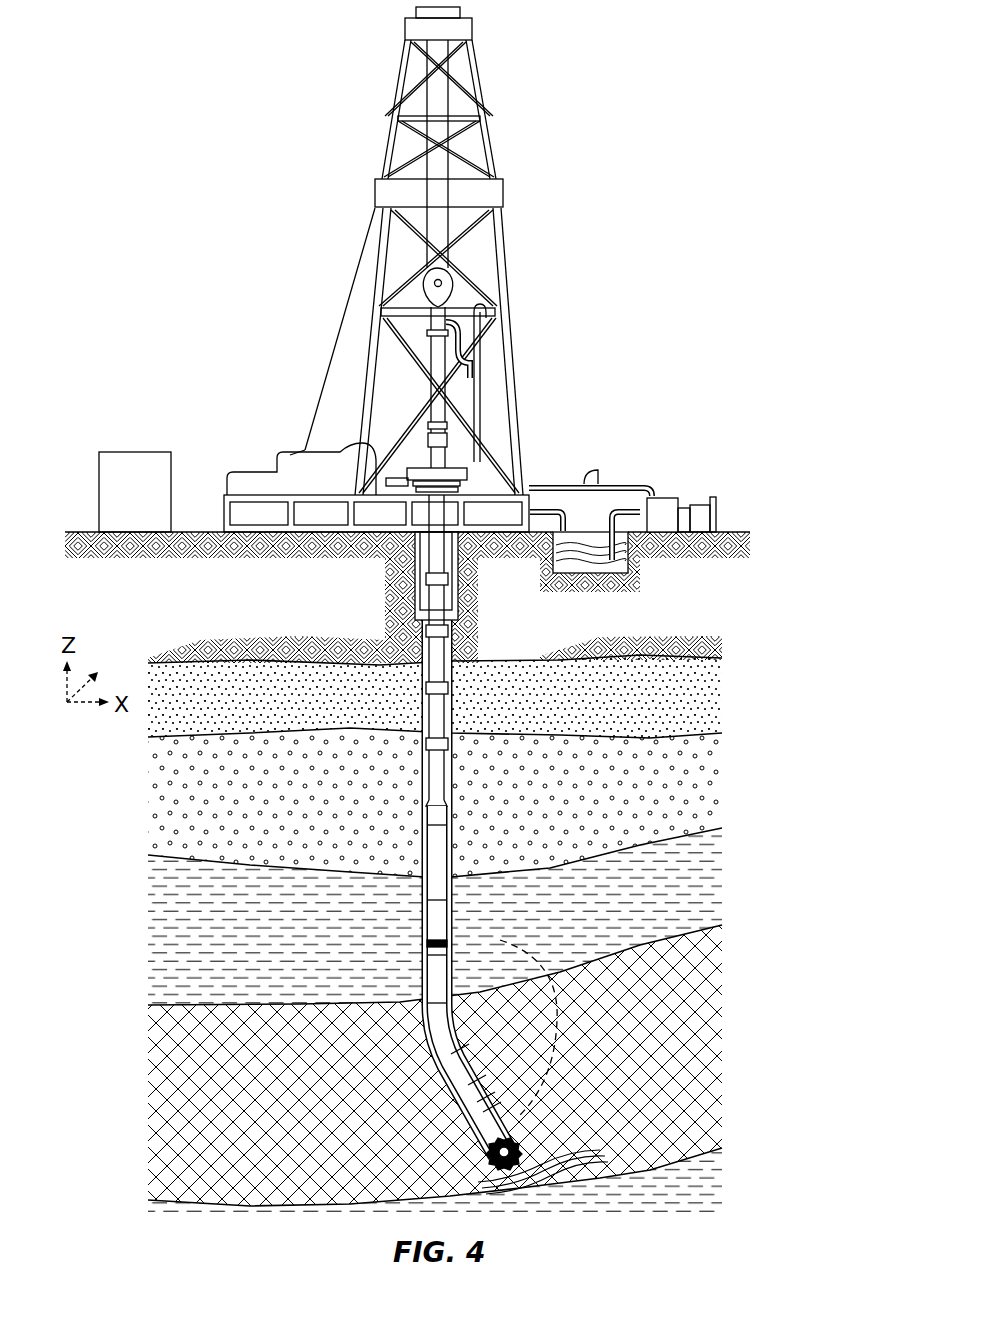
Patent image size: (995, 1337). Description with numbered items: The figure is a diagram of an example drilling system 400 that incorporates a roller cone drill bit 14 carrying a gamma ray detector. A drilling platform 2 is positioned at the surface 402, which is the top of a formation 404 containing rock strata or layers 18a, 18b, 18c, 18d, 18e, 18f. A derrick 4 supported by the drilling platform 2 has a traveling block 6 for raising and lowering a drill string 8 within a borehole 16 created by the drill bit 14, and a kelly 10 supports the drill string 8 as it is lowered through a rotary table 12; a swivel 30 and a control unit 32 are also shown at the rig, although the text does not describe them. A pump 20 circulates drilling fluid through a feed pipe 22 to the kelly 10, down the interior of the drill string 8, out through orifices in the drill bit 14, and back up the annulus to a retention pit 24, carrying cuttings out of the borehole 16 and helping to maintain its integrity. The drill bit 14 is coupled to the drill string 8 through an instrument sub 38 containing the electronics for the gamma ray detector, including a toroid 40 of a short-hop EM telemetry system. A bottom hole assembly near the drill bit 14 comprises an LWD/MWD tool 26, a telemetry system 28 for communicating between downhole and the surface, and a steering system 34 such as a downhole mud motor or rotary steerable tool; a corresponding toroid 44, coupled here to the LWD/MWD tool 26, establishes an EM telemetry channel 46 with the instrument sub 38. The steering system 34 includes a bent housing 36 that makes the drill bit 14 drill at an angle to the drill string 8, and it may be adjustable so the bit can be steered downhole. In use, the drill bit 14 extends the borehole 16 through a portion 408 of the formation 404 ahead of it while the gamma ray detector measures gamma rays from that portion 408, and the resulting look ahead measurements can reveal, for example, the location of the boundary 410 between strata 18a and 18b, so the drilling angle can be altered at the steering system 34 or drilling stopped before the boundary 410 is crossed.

The drilling system 400 is at (150, 40).
The derrick 4 is at (490, 143).
The traveling block 6 is at (446, 283).
The kelly 10 is at (448, 357).
The swivel 30 is at (448, 428).
The rotary table 12 is at (458, 468).
The drilling platform 2 is at (224, 515).
The surface 402 is at (78, 531).
The control unit 32 is at (135, 492).
The feed pipe 22 is at (590, 484).
The pump 20 is at (666, 497).
The retention pit 24 is at (590, 548).
The formation 404 is at (82, 598).
The rock stratum 18f is at (407, 597).
The rock stratum 18e is at (435, 696).
The rock stratum 18d is at (435, 803).
The rock stratum 18c is at (435, 916).
The rock stratum 18b is at (435, 1065).
The rock stratum 18a is at (435, 1180).
The drill string 8 is at (452, 648).
The borehole 16 is at (452, 702).
The telemetry system 28 is at (440, 815).
The LWD/MWD tool 26 is at (436, 855).
The toroid 44 is at (426, 942).
The EM telemetry channel 46 is at (500, 940).
The toroid 40 is at (392, 972).
The steering system 34 is at (412, 1008).
The bent housing 36 is at (432, 1024).
The roller cone drill bit 14 is at (520, 1143).
The instrument sub 38 is at (490, 1145).
The portion of the formation 408 is at (572, 1152).
The boundary 410 is at (214, 1198).